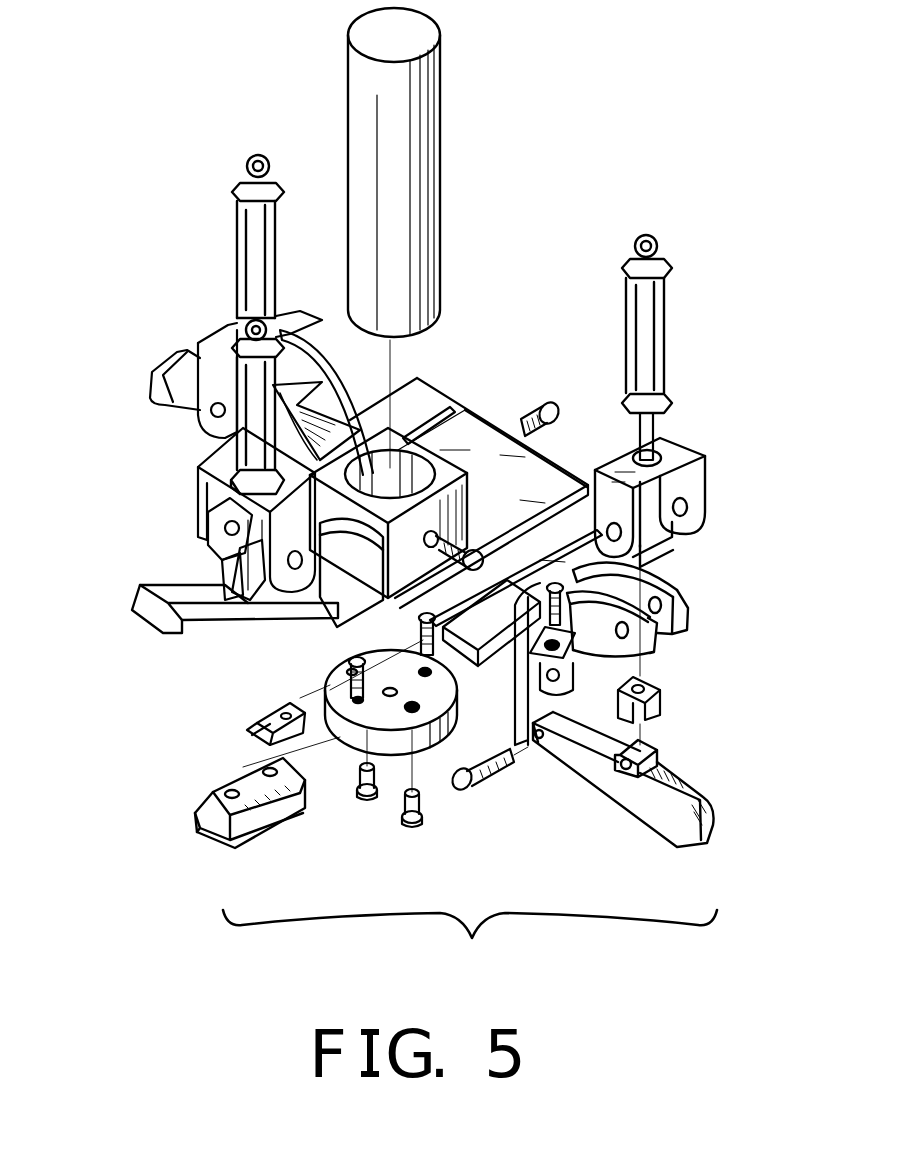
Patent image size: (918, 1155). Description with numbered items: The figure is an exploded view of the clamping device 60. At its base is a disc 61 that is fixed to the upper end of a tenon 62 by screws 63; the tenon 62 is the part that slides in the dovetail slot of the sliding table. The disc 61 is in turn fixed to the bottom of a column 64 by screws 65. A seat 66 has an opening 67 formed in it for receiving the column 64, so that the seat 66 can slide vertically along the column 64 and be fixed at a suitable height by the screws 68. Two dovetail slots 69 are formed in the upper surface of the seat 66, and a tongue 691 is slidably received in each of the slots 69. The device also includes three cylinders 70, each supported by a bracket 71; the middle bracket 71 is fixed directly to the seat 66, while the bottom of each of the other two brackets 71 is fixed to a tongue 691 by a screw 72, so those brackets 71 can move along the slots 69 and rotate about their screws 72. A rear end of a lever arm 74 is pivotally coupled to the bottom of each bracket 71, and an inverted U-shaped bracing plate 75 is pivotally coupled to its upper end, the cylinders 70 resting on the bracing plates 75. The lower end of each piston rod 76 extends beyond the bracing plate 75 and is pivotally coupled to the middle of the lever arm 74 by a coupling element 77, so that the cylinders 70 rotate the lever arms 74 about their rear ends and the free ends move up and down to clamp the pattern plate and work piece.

The clamping device 60 is at (541, 280).
The disc 61 is at (455, 718).
The tenon 62 is at (252, 840).
The screws 63 is at (420, 625).
The column 64 is at (433, 112).
The screws 65 is at (360, 786).
The seat 66 is at (488, 422).
The opening 67 is at (420, 482).
The screws 68 is at (548, 401).
The dovetail slots 69 is at (445, 405).
The tongue 691 is at (250, 732).
The cylinders 70 is at (240, 250).
The bracket 71 is at (698, 590).
The screw 72 is at (520, 578).
The lever arm 74 is at (698, 832).
The bracing plate 75 is at (684, 446).
The piston rod 76 is at (642, 426).
The coupling element 77 is at (660, 706).